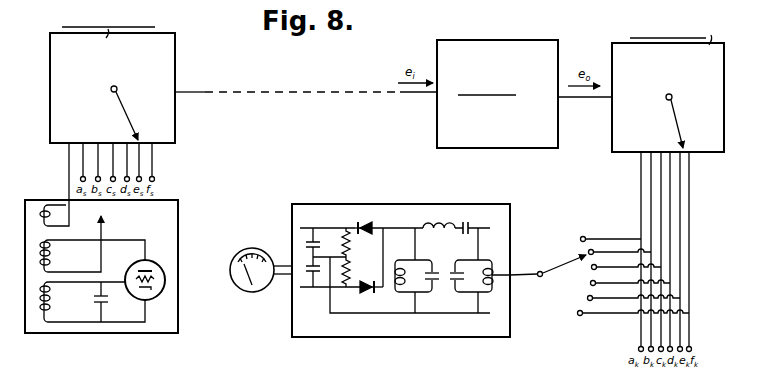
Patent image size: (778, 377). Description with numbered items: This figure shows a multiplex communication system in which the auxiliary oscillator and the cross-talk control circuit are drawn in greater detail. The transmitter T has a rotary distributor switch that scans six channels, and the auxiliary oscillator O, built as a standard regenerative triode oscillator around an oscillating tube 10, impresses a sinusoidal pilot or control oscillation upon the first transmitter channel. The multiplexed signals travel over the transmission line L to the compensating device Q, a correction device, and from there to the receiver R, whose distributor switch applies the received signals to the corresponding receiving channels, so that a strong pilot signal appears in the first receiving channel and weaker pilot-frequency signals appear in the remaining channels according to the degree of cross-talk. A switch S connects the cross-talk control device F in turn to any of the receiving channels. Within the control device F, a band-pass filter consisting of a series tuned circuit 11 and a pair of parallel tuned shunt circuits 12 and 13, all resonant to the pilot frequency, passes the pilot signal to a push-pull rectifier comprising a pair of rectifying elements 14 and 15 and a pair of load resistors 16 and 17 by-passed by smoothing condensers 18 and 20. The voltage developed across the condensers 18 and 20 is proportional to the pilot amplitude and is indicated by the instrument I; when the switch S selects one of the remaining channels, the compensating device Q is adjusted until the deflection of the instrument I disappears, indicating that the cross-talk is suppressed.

The transmitter T is at (128, 113).
The auxiliary oscillator O is at (180, 227).
The oscillating tube 10 is at (166, 255).
The transmission line L is at (299, 90).
The compensating device Q is at (497, 84).
The receiver R is at (680, 115).
The switch S is at (571, 254).
The instrument I is at (256, 246).
The cross-talk control device F is at (402, 203).
The series tuned circuit 11 is at (454, 222).
The parallel tuned shunt circuit 12 is at (418, 262).
The parallel tuned shunt circuit 13 is at (492, 261).
The rectifying element 14 is at (364, 222).
The rectifying element 15 is at (376, 291).
The load resistor 16 is at (349, 246).
The load resistor 17 is at (349, 274).
The smoothing condenser 18 is at (322, 240).
The smoothing condenser 20 is at (322, 273).